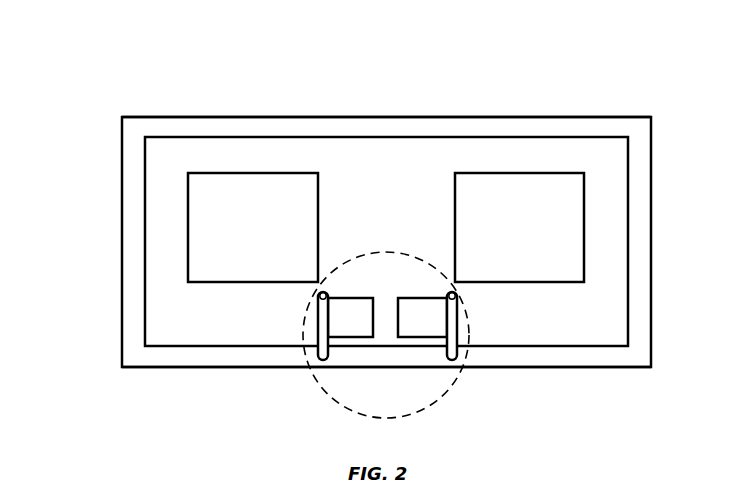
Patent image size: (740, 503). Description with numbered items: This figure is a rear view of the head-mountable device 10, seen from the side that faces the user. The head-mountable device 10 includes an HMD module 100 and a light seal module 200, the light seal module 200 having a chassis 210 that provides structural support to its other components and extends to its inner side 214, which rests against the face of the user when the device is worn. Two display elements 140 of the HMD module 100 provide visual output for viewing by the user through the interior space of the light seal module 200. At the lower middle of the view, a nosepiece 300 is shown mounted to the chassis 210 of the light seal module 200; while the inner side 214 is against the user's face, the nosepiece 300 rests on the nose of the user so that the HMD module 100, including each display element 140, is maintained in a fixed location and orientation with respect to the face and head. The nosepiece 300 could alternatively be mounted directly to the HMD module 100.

The head-mountable device 10 is at (99, 71).
The HMD module 100 is at (607, 160).
The display element 140 is at (295, 190).
The light seal module 200 is at (253, 117).
The chassis 210 is at (121, 118).
The inner side 214 is at (183, 350).
The nosepiece 300 is at (356, 338).